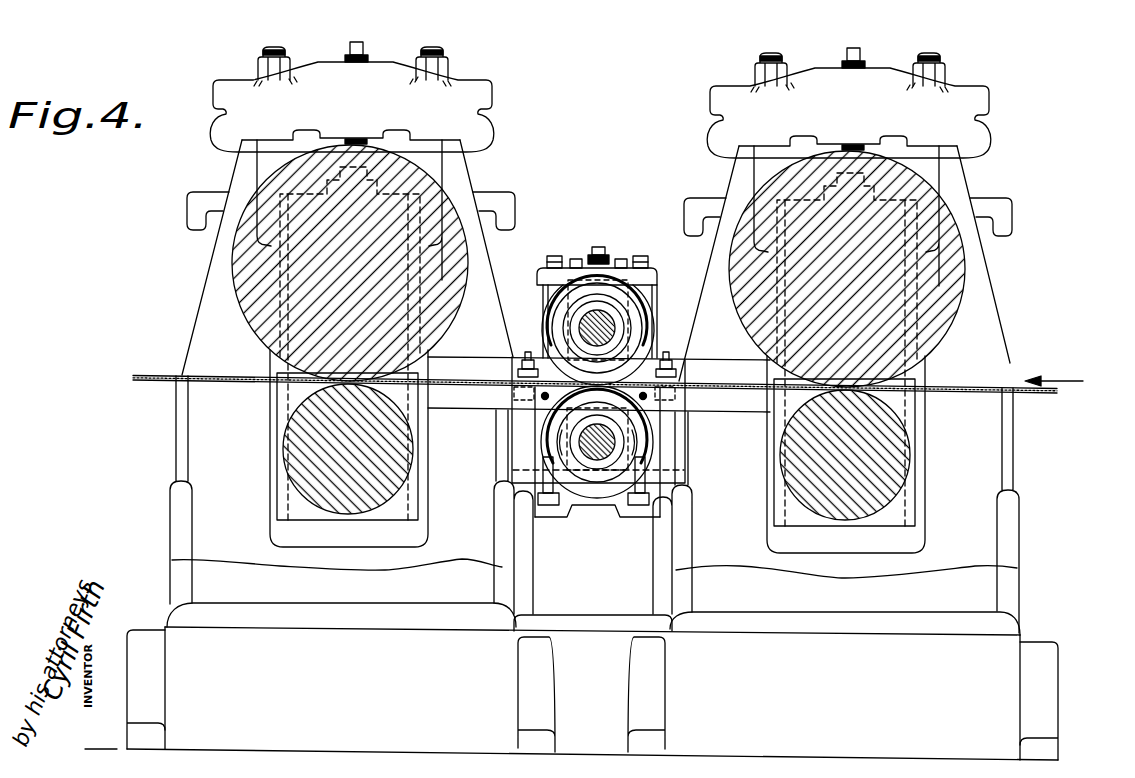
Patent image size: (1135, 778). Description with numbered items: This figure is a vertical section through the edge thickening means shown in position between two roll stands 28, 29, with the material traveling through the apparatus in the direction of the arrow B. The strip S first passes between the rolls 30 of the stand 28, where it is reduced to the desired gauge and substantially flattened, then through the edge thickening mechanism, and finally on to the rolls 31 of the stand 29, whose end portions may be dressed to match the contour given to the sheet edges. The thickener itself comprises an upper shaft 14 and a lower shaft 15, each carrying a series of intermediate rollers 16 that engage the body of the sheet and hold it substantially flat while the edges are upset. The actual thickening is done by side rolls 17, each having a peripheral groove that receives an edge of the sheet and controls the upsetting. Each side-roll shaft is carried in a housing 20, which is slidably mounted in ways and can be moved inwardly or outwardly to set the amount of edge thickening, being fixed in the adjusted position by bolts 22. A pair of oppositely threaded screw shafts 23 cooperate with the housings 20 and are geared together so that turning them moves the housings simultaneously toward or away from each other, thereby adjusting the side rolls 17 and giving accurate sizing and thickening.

The upper shaft 14 is at (582, 328).
The lower shaft 15 is at (612, 444).
The intermediate rollers 16 is at (647, 320).
The side rolls 17 is at (543, 433).
The housing 20 is at (645, 292).
The bolts 22 is at (528, 336).
The screw shafts 23 is at (540, 398).
The roll stand 28 is at (844, 300).
The roll stand 29 is at (458, 158).
The rolls 30 is at (882, 335).
The rolls 31 is at (262, 260).
The strip S is at (962, 387).
The arrow B is at (1054, 366).